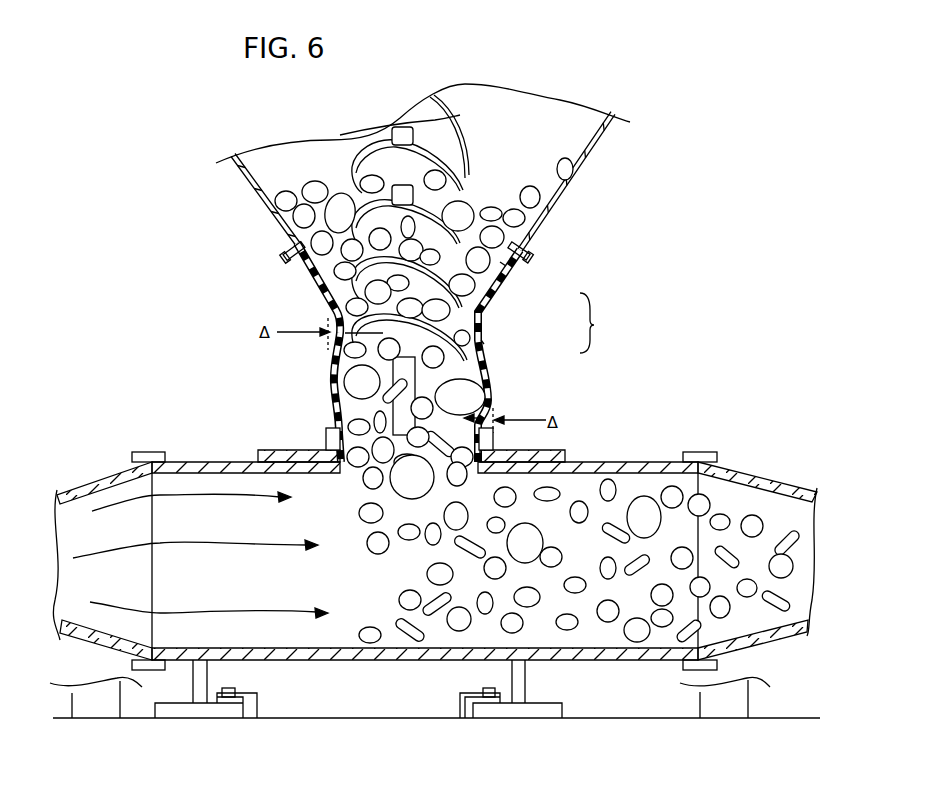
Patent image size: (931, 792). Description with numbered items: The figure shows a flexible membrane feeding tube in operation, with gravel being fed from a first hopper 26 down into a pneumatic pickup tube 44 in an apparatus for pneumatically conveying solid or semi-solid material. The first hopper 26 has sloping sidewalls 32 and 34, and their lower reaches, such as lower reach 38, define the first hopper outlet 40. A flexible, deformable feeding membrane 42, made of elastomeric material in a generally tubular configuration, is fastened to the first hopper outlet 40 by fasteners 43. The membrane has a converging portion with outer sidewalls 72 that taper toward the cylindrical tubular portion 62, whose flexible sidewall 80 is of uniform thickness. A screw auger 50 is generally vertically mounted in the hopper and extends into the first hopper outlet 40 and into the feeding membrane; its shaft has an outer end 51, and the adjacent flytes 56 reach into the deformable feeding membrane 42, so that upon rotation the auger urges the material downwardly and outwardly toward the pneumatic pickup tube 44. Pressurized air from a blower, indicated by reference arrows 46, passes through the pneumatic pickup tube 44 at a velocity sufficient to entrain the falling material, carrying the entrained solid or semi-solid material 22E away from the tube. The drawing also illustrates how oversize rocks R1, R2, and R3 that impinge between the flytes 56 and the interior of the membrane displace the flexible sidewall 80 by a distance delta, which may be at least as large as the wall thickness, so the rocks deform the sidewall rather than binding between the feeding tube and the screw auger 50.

The entrained solid or semi-solid material 22E is at (752, 520).
The first hopper 26 is at (612, 126).
The sloping sidewall 32 is at (582, 163).
The sloping sidewall 34 is at (258, 177).
The lower reach of sidewall 38 is at (307, 280).
The first hopper outlet 40 is at (512, 268).
The deformable feeding membrane 42 is at (600, 323).
The fasteners 43 is at (282, 254).
The pneumatic pickup tube 44 is at (633, 462).
The air flow reference arrows 46 is at (213, 492).
The screw auger 50 is at (406, 265).
The outer end of shaft 51 is at (404, 440).
The flytes 56 is at (463, 187).
The tubular portion 62 is at (487, 345).
The outer sidewalls 72 is at (507, 284).
The flexible sidewall 80 is at (457, 368).
The rock R1 is at (467, 397).
The rock R2 is at (350, 383).
The rock R3 is at (348, 350).